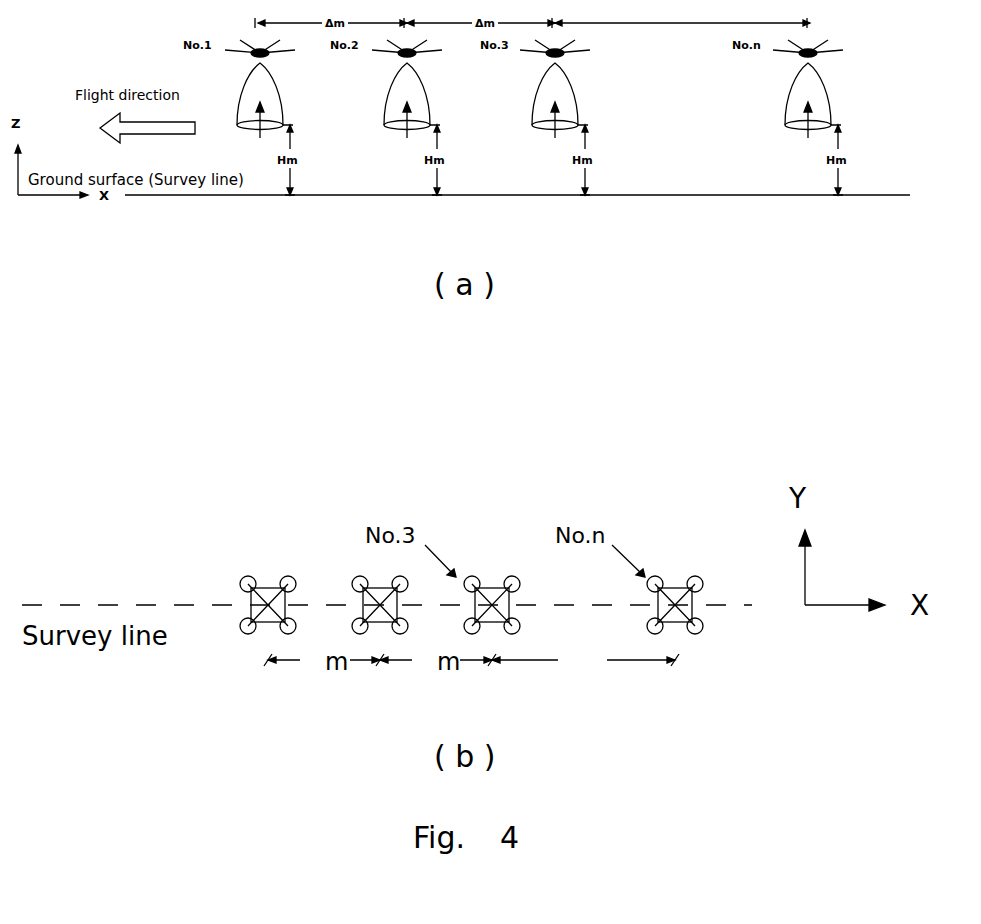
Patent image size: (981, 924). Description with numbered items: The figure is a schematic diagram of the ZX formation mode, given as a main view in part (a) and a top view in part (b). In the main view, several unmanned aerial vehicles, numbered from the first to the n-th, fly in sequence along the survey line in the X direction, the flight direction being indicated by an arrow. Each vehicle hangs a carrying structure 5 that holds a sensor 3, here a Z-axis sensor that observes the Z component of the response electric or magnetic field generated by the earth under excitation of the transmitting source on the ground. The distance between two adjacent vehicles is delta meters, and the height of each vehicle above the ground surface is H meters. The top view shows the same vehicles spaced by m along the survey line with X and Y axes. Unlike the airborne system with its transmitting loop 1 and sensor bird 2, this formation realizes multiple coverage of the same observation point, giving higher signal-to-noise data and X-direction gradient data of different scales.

The sensor 3 is at (800, 117).
The carrying structure 5 is at (781, 122).
The transmitting loop 1 is at (233, 577).
The sensor bird 2 is at (345, 577).